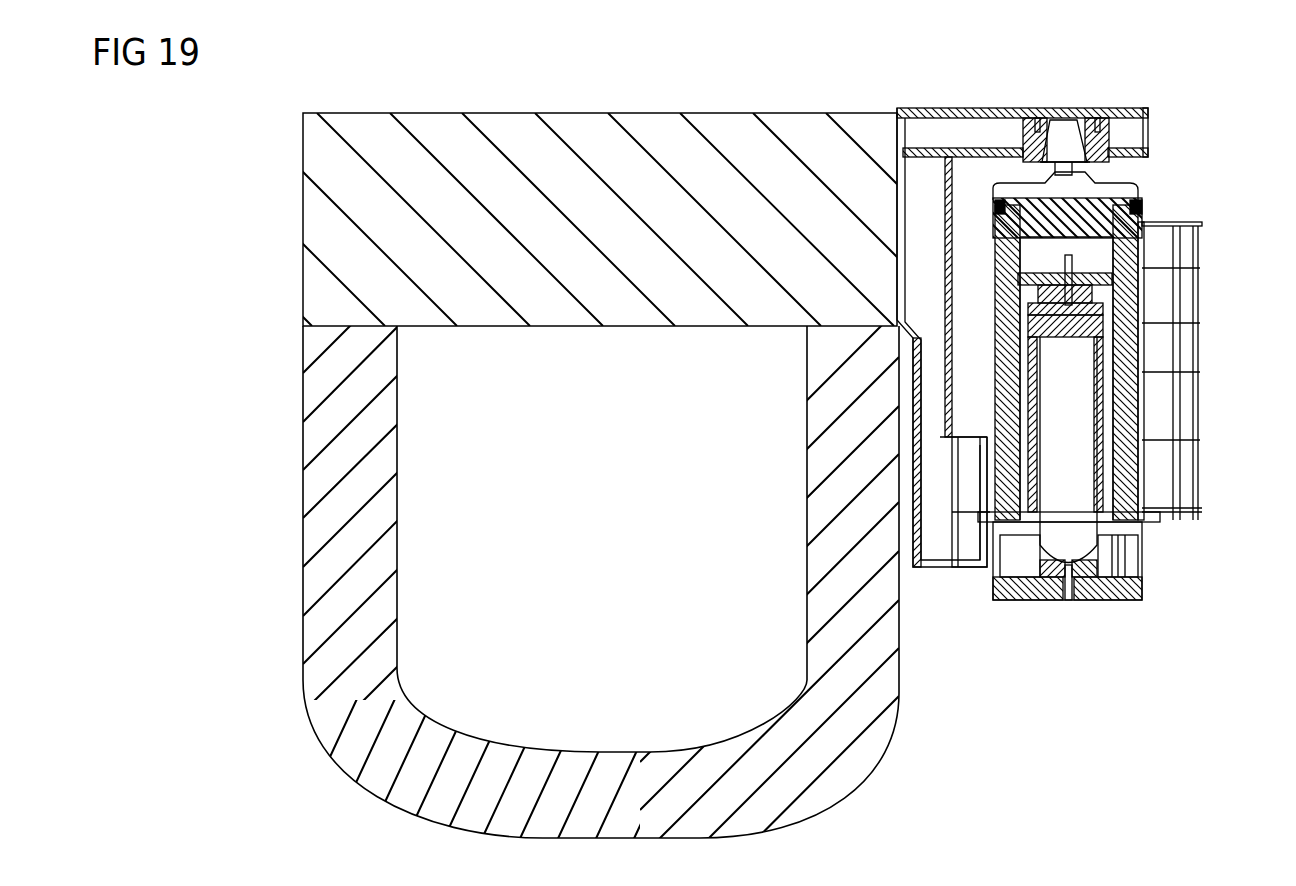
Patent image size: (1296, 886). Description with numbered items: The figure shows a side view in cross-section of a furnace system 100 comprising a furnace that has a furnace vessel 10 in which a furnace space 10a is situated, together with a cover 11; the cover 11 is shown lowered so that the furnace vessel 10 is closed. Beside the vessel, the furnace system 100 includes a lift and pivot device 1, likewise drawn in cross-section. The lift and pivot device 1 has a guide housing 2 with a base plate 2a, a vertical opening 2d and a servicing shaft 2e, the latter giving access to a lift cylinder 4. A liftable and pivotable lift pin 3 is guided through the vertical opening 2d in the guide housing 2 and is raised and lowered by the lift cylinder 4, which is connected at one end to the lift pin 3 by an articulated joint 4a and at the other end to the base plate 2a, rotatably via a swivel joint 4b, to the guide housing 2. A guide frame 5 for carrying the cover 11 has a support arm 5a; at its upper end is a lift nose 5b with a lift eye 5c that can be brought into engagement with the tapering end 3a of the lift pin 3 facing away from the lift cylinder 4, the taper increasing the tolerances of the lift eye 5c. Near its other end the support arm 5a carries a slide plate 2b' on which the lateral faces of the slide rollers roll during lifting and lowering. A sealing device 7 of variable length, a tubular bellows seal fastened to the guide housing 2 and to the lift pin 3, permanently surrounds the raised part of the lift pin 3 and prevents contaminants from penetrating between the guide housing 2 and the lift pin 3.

The furnace system 100 is at (240, 172).
The cover 11 is at (729, 130).
The furnace vessel 10 is at (317, 484).
The furnace space 10a is at (423, 563).
The lift and pivot device 1 is at (1240, 212).
The guide frame 5 is at (965, 108).
The support arm 5a is at (915, 497).
The lift nose 5b is at (1125, 133).
The lift eye 5c is at (1062, 122).
The tapering end 3a is at (1062, 190).
The sealing device 7 is at (1140, 212).
The lift pin 3 is at (1122, 393).
The vertical opening 2d is at (1125, 338).
The guide housing 2 is at (1197, 428).
The articulated joint 4a is at (1065, 267).
The lift cylinder 4 is at (1092, 455).
The swivel joint 4b is at (1068, 600).
The base plate 2a is at (1115, 592).
The servicing shaft 2e is at (1018, 562).
The slide plate 2b' is at (967, 529).